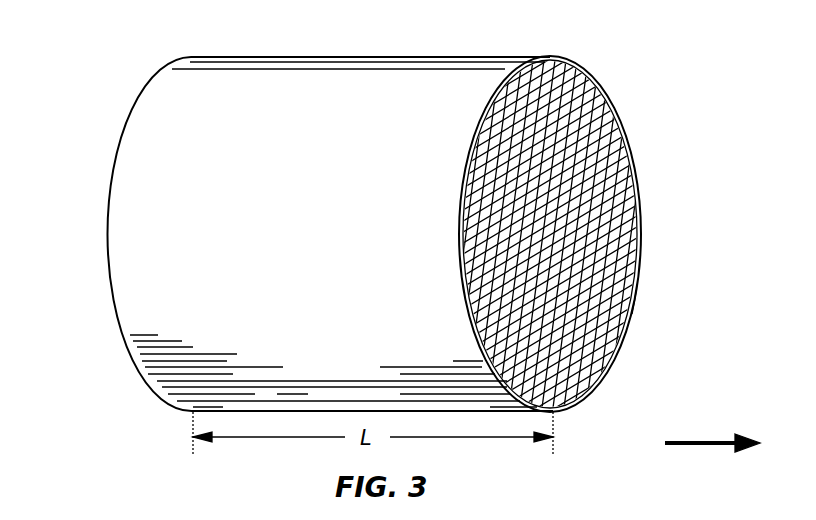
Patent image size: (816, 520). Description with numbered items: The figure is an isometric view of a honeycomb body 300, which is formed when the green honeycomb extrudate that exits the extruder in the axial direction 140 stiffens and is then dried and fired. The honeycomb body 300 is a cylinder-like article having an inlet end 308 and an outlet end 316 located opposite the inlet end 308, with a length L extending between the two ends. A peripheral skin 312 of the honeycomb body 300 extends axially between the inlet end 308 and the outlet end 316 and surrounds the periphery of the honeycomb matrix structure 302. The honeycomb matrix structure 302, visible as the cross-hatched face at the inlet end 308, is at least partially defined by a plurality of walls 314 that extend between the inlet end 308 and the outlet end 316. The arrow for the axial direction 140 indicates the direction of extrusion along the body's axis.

The honeycomb body 300 is at (412, 56).
The honeycomb matrix structure 302 is at (632, 183).
The inlet end 308 is at (615, 119).
The walls 314 is at (631, 312).
The outlet end 316 is at (124, 129).
The peripheral skin 312 is at (170, 213).
The axial direction 140 is at (716, 440).